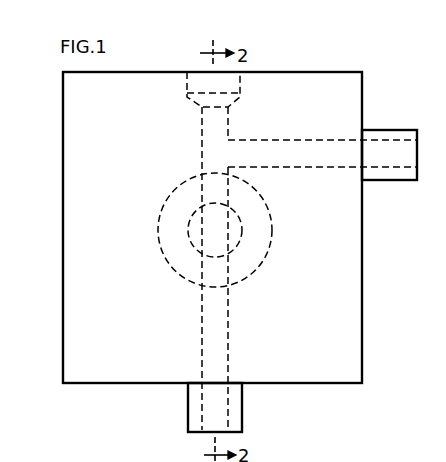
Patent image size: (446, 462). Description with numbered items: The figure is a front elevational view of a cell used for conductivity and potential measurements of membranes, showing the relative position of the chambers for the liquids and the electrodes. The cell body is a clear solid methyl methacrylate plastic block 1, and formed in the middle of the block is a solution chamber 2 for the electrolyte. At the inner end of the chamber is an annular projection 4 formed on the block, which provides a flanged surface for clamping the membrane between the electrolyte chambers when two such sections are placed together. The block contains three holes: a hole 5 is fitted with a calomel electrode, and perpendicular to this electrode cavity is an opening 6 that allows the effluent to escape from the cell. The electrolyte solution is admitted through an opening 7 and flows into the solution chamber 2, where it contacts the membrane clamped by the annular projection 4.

The plastic block 1 is at (63, 322).
The solution chamber 2 is at (188, 231).
The annular projection 4 is at (162, 257).
The hole 5 is at (240, 90).
The opening 6 is at (398, 141).
The opening 7 is at (232, 404).